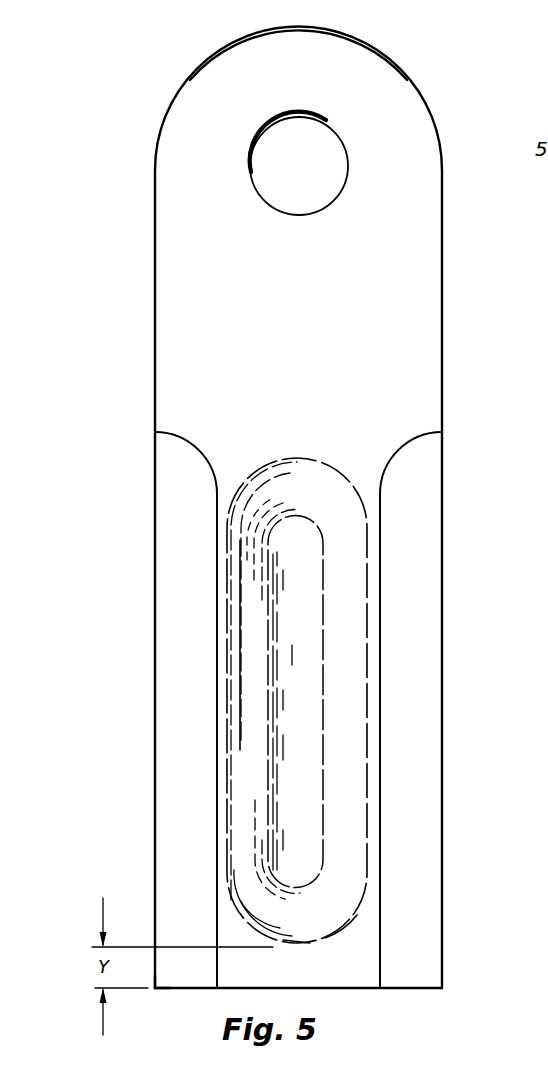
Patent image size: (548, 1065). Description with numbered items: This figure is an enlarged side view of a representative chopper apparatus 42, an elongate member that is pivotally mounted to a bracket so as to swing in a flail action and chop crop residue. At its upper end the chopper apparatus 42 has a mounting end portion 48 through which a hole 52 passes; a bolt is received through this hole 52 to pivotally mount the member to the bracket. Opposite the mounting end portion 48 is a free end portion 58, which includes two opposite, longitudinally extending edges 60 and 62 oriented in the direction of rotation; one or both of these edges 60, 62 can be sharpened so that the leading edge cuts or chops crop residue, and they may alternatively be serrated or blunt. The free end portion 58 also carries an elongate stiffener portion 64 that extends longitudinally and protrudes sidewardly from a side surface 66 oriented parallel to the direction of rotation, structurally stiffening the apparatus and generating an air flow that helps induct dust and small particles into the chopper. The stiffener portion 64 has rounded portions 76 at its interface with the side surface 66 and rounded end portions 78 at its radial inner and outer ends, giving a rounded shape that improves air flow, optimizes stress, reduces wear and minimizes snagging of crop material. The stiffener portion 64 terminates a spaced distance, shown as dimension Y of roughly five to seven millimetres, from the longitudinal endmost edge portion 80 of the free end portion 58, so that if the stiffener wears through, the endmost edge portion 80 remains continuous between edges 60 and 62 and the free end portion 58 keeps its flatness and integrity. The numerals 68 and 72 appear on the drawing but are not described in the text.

The chopper apparatus 42 is at (448, 357).
The mounting end portion 48 is at (402, 70).
The hole 52 is at (277, 130).
The free end portion 58 is at (442, 986).
The longitudinally extending edge 60 is at (442, 788).
The longitudinally extending edge 62 is at (155, 790).
The stiffener portion 64 is at (370, 553).
The side surface 66 is at (366, 468).
The channel 68 is at (533, 735).
The rib 72 is at (547, 838).
The rounded portions 76 is at (350, 924).
The rounded end portions 78 is at (317, 483).
The longitudinal endmost edge portion 80 is at (180, 990).